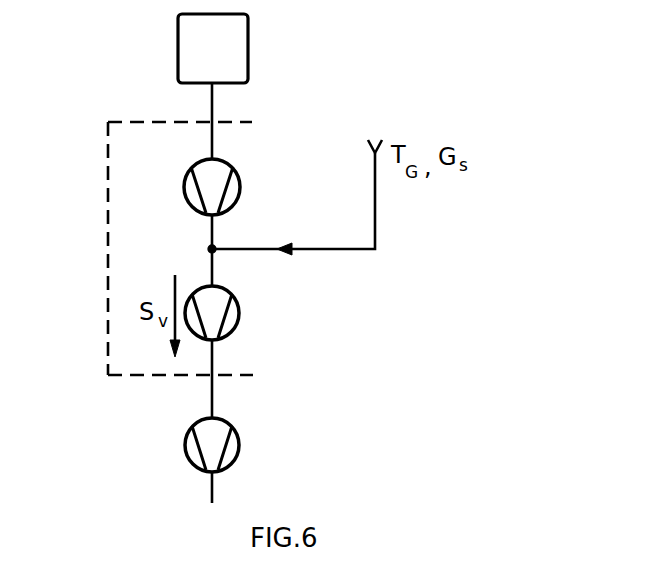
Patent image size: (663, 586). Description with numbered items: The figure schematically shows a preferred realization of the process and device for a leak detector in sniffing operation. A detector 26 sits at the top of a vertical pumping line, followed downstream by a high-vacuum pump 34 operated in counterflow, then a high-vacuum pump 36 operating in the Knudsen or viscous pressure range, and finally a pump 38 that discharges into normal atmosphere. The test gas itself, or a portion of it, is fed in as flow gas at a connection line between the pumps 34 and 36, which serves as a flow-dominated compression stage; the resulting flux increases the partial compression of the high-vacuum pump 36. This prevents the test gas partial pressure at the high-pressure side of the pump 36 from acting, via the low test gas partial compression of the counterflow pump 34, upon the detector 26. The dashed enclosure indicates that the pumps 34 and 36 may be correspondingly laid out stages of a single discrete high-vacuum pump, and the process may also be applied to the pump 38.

The detector 26 is at (248, 50).
The high-vacuum pump 34 is at (240, 183).
The high-vacuum pump 36 is at (239, 312).
The pump 38 is at (239, 438).